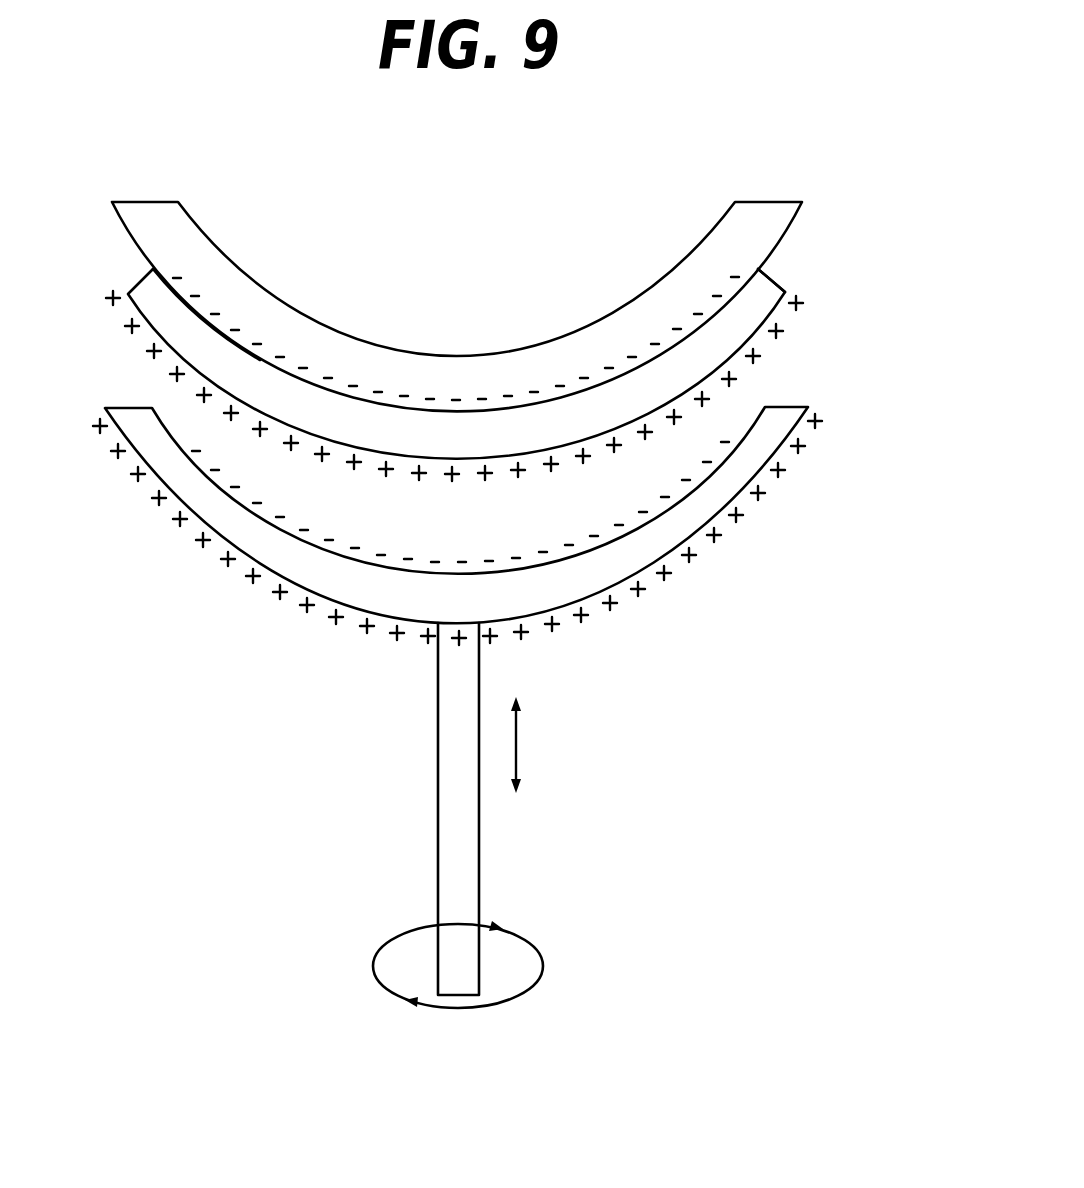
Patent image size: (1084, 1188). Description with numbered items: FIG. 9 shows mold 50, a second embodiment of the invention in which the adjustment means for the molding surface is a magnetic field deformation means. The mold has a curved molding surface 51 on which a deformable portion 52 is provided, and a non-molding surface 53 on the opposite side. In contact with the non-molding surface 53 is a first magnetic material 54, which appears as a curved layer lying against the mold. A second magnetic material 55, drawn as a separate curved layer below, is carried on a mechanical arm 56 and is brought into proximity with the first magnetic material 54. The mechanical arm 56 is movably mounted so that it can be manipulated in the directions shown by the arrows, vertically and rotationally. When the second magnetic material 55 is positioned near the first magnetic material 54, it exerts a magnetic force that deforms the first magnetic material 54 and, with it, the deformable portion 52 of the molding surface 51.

The mold 50 is at (863, 186).
The molding surface 51 is at (213, 237).
The deformable portion 52 is at (432, 353).
The non-molding surface 53 is at (206, 326).
The first magnetic material 54 is at (755, 300).
The second magnetic material 55 is at (743, 479).
The mechanical arm 56 is at (467, 830).